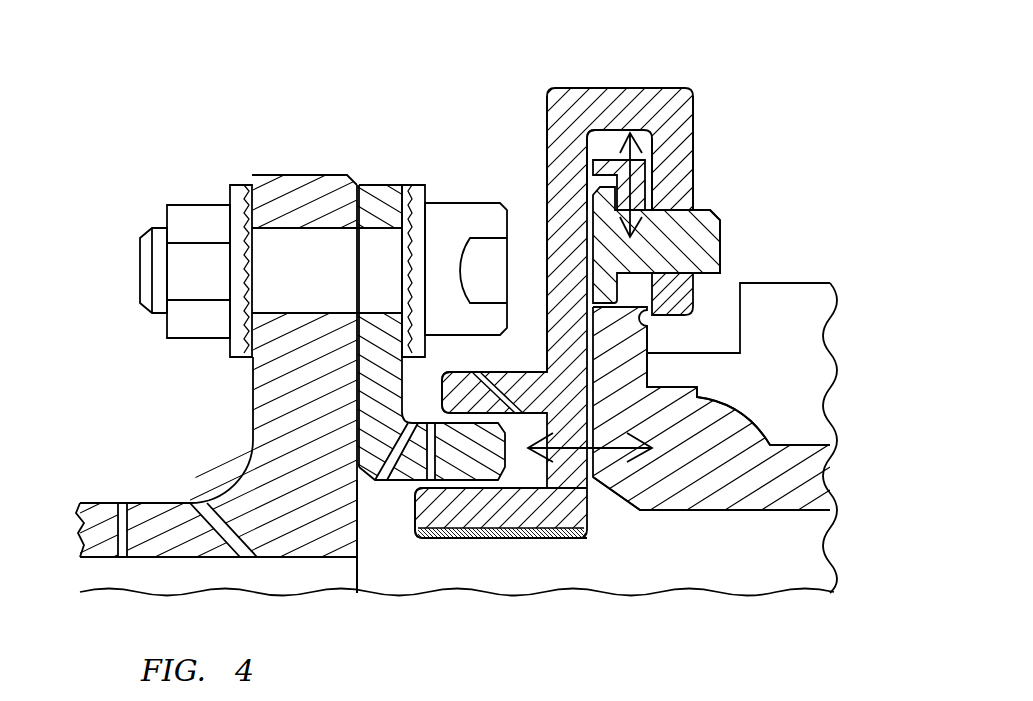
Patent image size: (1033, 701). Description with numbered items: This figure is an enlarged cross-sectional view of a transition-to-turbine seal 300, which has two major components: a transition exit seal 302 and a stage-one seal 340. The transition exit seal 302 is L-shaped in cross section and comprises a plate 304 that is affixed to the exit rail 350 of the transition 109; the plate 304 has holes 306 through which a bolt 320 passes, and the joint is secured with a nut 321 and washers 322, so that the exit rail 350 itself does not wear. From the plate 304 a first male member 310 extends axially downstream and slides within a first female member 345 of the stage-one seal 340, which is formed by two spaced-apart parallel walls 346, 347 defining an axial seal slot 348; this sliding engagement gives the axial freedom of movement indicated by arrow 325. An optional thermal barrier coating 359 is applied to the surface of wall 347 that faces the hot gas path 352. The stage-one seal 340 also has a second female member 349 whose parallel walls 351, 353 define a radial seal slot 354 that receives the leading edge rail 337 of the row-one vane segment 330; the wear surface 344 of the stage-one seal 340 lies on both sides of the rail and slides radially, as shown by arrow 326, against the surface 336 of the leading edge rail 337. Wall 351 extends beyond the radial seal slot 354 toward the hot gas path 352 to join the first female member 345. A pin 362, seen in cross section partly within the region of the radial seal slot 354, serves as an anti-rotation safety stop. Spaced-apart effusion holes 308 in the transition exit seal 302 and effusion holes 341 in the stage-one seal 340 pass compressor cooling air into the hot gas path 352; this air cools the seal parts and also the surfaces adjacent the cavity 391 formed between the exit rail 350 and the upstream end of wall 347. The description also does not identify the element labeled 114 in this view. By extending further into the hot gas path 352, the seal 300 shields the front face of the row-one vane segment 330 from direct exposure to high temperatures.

The transition-to-turbine seal 300 is at (425, 52).
The transition exit seal 302 is at (388, 240).
The plate 304 is at (383, 383).
The holes 306 is at (378, 340).
The effusion holes 308 is at (500, 447).
The first male member 310 is at (463, 447).
The frame base 114 is at (328, 373).
The transition 109 is at (100, 523).
The bolt 320 is at (458, 203).
The nut 321 is at (198, 203).
The washers 322 is at (240, 185).
The arrow 325 is at (617, 452).
The arrow 326 is at (650, 137).
The row 1 vane segment 330 is at (807, 478).
The surface 336 is at (587, 170).
The leading edge rail 337 is at (615, 353).
The stage-1 seal 340 is at (567, 130).
The effusion holes 341 is at (505, 392).
The wear surface 344 is at (598, 138).
The first female member 345 is at (533, 510).
The parallel wall 346 is at (463, 393).
The parallel wall 347 is at (472, 508).
The axial seal slot 348 is at (500, 488).
The second female member 349 is at (680, 102).
The exit rail 350 is at (303, 193).
The wall 351 is at (563, 330).
The hot gas path 352 is at (752, 645).
The wall 353 is at (693, 160).
The radial seal slot 354 is at (612, 140).
The thermal barrier coating 359 is at (522, 460).
The pin 362 is at (720, 230).
The cavity 391 is at (407, 527).